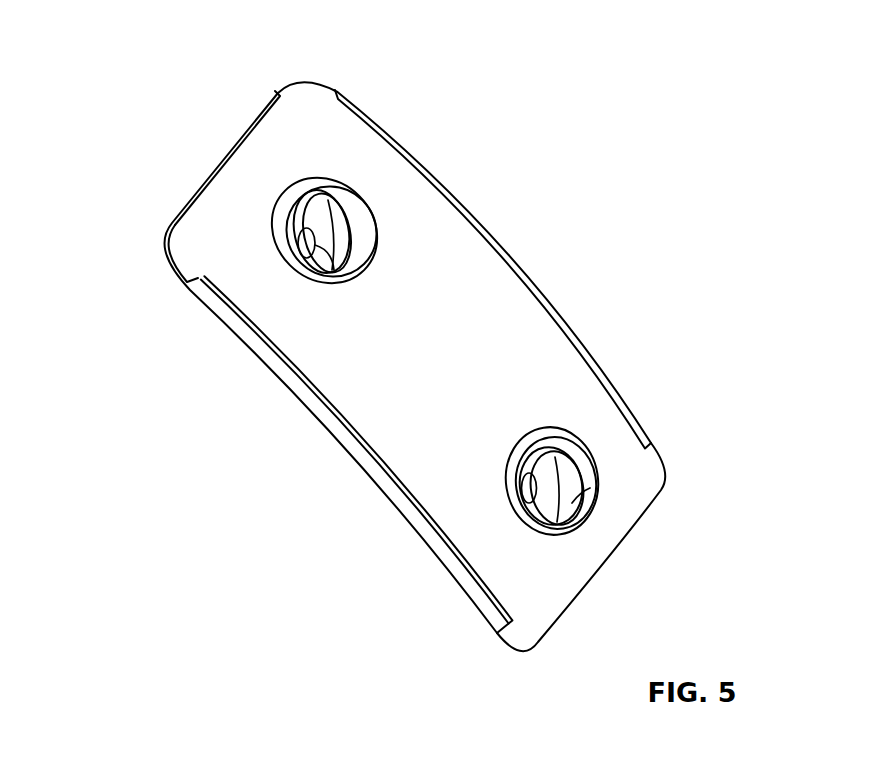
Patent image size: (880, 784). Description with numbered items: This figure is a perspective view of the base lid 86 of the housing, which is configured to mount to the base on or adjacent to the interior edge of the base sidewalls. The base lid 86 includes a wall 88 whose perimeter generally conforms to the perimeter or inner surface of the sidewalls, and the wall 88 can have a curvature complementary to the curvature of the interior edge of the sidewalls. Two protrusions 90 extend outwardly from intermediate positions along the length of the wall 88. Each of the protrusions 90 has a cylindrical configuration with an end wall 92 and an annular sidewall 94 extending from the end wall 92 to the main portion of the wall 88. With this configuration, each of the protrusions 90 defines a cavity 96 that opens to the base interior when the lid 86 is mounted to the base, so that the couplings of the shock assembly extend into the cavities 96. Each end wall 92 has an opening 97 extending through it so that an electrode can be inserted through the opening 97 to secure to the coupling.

The base lid 86 is at (133, 35).
The wall 88 is at (470, 272).
The protrusions 90 is at (283, 235).
The end wall 92 is at (337, 232).
The annular sidewall 94 is at (333, 202).
The cavity 96 is at (342, 257).
The opening 97 is at (322, 250).